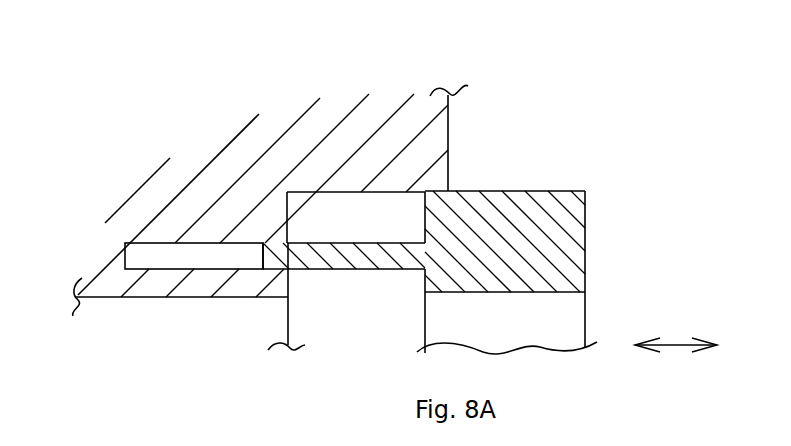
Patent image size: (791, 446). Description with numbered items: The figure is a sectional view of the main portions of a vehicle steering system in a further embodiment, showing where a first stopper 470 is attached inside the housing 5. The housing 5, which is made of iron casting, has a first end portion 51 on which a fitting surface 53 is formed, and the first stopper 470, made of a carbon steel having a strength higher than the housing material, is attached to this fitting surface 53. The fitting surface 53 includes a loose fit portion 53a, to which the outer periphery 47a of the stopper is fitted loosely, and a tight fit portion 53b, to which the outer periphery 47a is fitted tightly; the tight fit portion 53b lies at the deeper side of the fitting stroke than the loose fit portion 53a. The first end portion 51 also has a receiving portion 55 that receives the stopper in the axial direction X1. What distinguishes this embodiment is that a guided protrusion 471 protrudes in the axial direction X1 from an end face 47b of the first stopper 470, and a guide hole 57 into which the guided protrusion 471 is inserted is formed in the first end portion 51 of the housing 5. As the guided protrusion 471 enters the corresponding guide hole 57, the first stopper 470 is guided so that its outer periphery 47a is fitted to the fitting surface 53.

The housing 5 is at (196, 152).
The first end portion 51 is at (270, 128).
The fitting surface 53 is at (450, 56).
The loose fit portion 53a is at (400, 193).
The tight fit portion 53b is at (324, 193).
The receiving portion 55 is at (287, 215).
The guide hole 57 is at (160, 257).
The outer periphery 47a is at (489, 191).
The end face 47b is at (425, 280).
The first stopper 470 is at (557, 188).
The guided protrusion 471 is at (340, 270).
The axial direction X1 is at (677, 347).